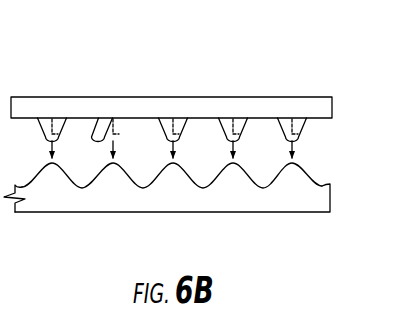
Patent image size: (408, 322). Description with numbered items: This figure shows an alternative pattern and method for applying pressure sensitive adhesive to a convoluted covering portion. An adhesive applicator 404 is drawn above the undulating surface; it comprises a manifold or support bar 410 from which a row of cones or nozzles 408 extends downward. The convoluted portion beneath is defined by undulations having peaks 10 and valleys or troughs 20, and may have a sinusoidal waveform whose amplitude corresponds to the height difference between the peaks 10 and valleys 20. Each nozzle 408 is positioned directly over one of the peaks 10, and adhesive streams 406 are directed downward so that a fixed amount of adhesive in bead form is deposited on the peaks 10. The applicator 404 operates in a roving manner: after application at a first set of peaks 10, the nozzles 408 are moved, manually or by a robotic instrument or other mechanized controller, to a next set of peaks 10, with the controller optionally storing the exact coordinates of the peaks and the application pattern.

The coating apparatus 404 is at (199, 87).
The manifold bar 410 is at (190, 92).
The nozzle 408 is at (333, 135).
The spray streams 406 is at (172, 200).
The peaks 10 is at (167, 209).
The valleys or troughs 20 is at (172, 209).